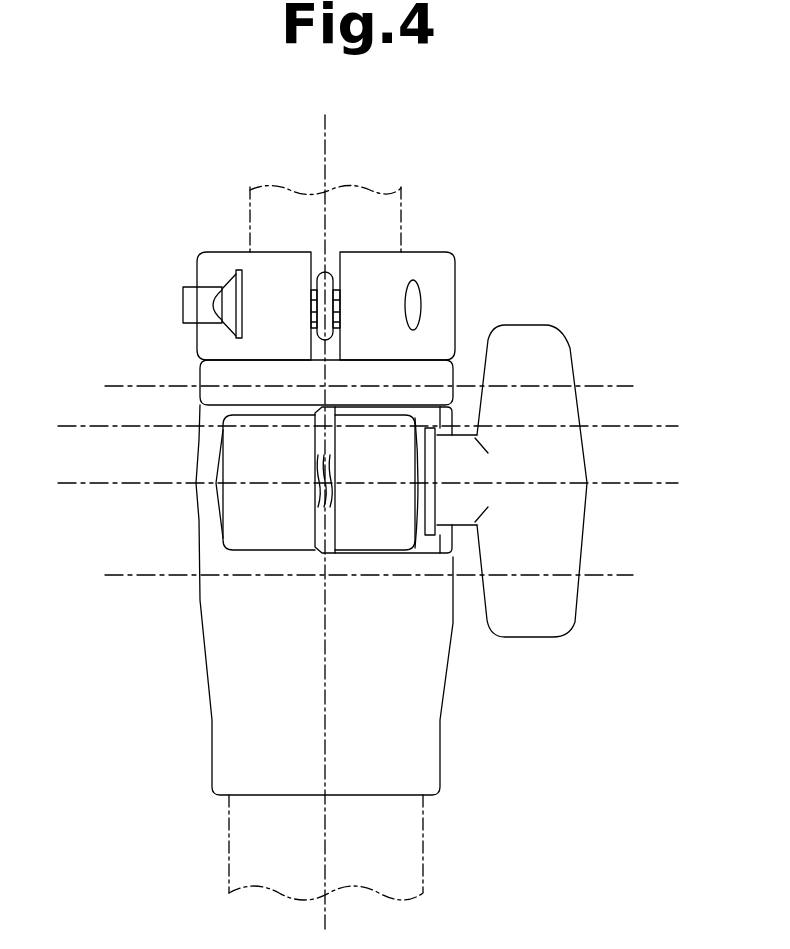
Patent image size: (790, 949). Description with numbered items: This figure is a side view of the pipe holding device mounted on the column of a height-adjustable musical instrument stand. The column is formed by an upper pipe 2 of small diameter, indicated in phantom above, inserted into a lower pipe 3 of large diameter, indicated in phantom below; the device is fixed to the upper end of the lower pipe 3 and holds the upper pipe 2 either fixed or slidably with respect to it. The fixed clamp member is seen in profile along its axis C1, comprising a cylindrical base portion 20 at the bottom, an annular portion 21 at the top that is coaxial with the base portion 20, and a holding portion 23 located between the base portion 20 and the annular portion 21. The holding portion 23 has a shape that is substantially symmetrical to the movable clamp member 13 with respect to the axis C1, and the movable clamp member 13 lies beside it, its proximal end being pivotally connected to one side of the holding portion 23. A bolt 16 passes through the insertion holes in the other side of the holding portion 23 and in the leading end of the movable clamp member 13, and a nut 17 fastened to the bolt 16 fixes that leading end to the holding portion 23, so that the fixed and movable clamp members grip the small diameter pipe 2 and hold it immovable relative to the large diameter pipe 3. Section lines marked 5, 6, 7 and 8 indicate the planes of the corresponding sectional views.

The axis C1 is at (325, 143).
The upper pipe 2 is at (401, 212).
The lower pipe 3 is at (423, 845).
The section line 5- 5 is at (64, 414).
The section line 6- 6 is at (64, 495).
The section line 7- 7 is at (111, 374).
The section line 8- 8 is at (111, 587).
The movable clamp member 13 is at (377, 534).
The bolt 16 is at (316, 509).
The nut 17 is at (567, 630).
The base portion 20 is at (203, 643).
The annular portion 21 is at (456, 258).
The holding portion 23 is at (198, 521).